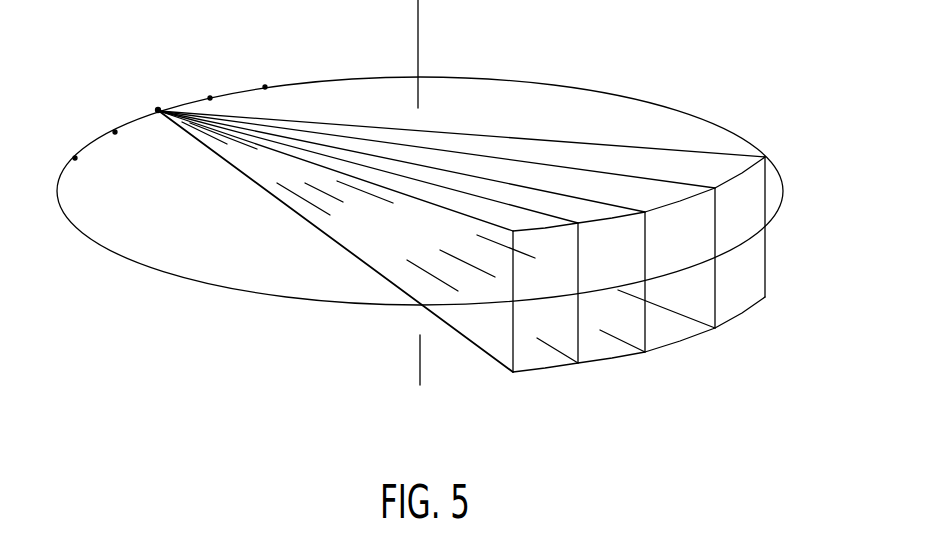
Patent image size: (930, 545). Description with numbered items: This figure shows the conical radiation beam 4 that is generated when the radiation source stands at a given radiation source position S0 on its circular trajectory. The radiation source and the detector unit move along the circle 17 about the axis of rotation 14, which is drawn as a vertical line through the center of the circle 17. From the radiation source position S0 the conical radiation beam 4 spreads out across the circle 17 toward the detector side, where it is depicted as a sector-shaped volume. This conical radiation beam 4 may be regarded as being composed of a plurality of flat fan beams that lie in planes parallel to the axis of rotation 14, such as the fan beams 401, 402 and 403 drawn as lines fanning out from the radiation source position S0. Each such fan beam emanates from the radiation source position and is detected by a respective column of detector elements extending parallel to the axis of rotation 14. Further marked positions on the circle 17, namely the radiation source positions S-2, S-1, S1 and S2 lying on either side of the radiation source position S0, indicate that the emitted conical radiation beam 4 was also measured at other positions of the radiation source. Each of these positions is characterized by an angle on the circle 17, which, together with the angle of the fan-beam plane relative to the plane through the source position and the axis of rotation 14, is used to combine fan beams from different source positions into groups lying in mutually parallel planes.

The conical radiation beam 4 is at (667, 165).
The axis of rotation 14 is at (418, 47).
The circle 17 is at (568, 80).
The fan beam 401 is at (477, 198).
The fan beam 402 is at (594, 198).
The fan beam 403 is at (507, 157).
The radiation source position S0 is at (158, 110).
The radiation source position S1 is at (115, 132).
The radiation source position S2 is at (75, 158).
The radiation source position S-1 is at (210, 98).
The radiation source position S-2 is at (265, 87).